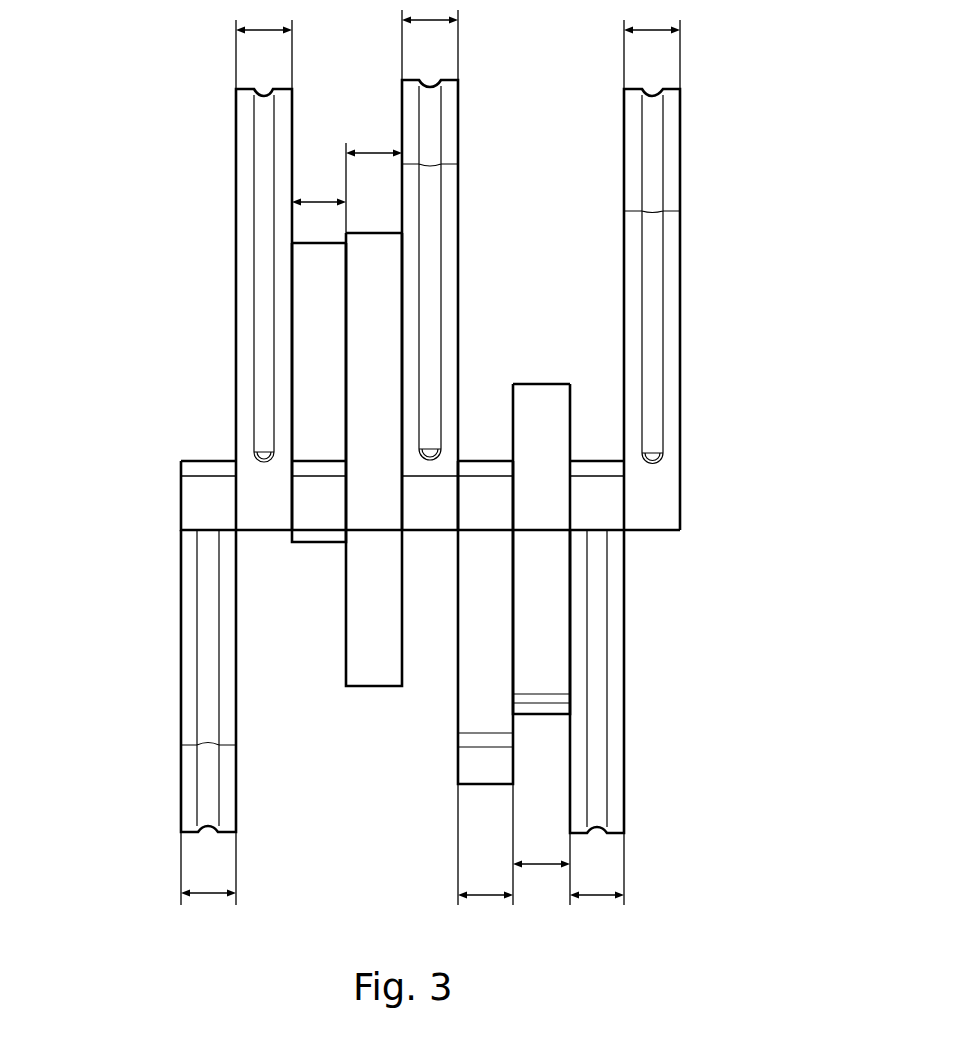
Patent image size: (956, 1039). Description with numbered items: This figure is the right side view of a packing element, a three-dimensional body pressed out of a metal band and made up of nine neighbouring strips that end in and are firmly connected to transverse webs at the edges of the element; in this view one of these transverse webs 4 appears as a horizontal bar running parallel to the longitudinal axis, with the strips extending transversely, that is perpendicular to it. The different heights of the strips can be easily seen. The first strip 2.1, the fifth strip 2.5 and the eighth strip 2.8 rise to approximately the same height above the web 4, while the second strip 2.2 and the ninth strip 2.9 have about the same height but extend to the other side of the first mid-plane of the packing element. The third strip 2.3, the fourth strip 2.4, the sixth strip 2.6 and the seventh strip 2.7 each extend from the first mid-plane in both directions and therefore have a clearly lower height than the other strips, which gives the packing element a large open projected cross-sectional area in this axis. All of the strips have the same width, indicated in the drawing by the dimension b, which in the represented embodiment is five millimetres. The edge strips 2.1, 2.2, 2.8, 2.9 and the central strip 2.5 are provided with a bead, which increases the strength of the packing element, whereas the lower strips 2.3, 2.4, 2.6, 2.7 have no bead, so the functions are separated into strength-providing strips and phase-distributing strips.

The transverse web 4 is at (688, 497).
The first strip 2.1 is at (680, 157).
The second strip 2.2 is at (627, 625).
The third strip 2.3 is at (540, 383).
The fourth strip 2.4 is at (457, 755).
The fifth strip 2.5 is at (458, 125).
The sixth strip 2.6 is at (346, 618).
The seventh strip 2.7 is at (308, 327).
The eighth strip 2.8 is at (236, 161).
The ninth strip 2.9 is at (179, 678).